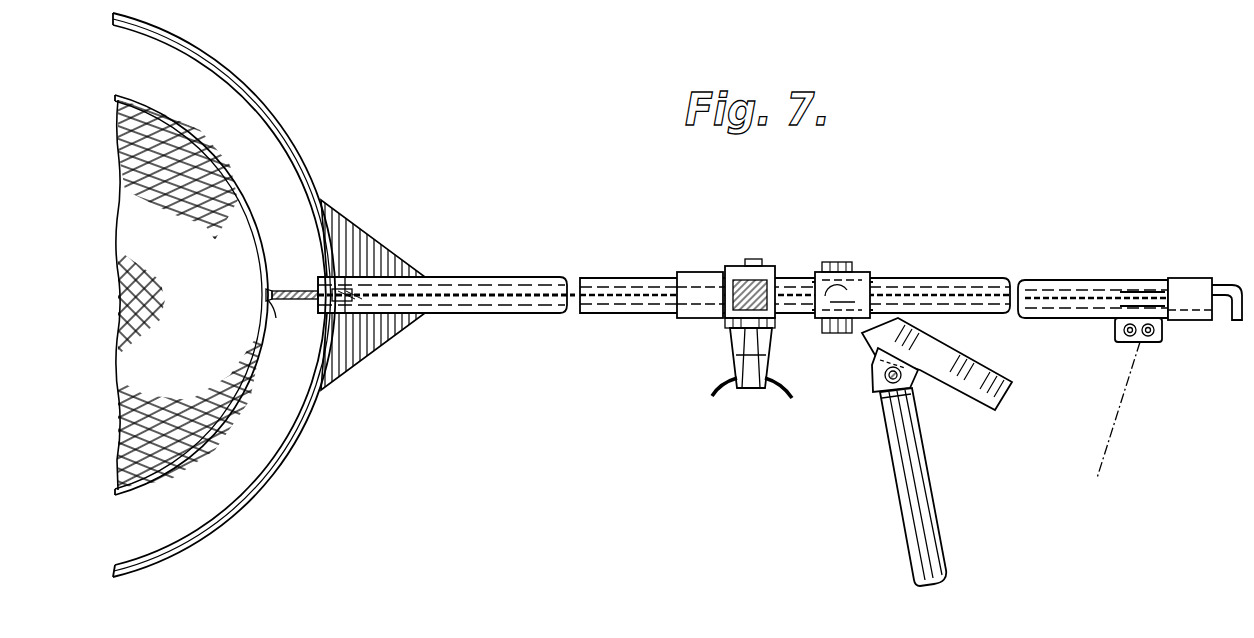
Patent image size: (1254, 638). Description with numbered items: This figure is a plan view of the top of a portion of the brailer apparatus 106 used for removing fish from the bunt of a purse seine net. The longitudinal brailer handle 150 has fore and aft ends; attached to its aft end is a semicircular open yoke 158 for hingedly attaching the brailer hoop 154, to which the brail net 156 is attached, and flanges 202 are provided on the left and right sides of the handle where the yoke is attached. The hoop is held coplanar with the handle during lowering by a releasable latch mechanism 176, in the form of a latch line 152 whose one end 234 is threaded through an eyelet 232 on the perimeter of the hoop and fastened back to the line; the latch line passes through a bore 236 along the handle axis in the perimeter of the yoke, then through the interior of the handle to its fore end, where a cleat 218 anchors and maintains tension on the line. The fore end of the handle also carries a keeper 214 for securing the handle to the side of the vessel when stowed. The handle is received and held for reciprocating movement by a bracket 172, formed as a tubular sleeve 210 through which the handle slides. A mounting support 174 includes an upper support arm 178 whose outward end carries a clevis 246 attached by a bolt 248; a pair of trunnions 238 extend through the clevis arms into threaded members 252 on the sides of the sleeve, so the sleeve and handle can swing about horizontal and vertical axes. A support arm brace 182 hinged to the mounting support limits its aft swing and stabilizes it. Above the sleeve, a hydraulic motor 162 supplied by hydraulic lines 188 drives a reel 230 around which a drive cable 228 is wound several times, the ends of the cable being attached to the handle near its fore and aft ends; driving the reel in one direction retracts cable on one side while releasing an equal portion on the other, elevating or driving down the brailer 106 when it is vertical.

The brailer apparatus 106 is at (555, 368).
The brailer handle 150 is at (1004, 275).
The latch line 152 is at (535, 270).
The brailer hoop 154 is at (226, 190).
The brail net 156 is at (193, 455).
The yoke 158 is at (237, 88).
The hydraulic motor 162 is at (742, 336).
The bracket 172 is at (750, 260).
The mounting support 174 is at (882, 480).
The latch mechanism 176 is at (354, 257).
The upper support arm 178 is at (962, 380).
The support arm brace 182 is at (927, 543).
The hydraulic lines 188 is at (710, 389).
The flanges 202 is at (337, 215).
The sleeve 210 is at (697, 272).
The keeper 214 is at (1218, 286).
The cleat 218 is at (1163, 333).
The drive cable 228 is at (646, 278).
The reel 230 is at (772, 262).
The eyelet 232 is at (292, 278).
The end of latch line 234 is at (277, 310).
The bore 236 is at (318, 262).
The trunnions 238 is at (838, 258).
The clevis 246 is at (856, 268).
The bolt 248 is at (806, 272).
The threaded members 252 is at (868, 264).